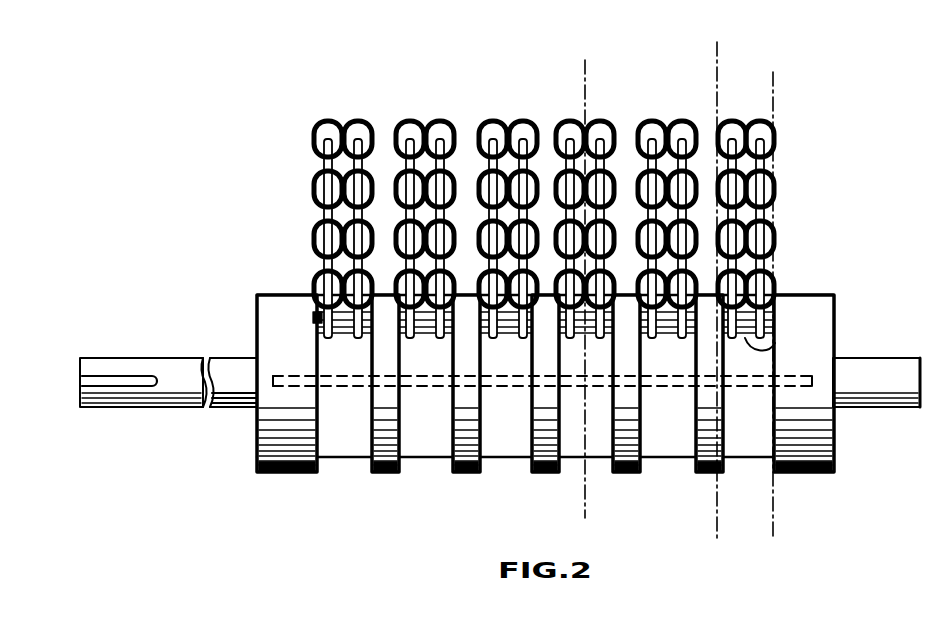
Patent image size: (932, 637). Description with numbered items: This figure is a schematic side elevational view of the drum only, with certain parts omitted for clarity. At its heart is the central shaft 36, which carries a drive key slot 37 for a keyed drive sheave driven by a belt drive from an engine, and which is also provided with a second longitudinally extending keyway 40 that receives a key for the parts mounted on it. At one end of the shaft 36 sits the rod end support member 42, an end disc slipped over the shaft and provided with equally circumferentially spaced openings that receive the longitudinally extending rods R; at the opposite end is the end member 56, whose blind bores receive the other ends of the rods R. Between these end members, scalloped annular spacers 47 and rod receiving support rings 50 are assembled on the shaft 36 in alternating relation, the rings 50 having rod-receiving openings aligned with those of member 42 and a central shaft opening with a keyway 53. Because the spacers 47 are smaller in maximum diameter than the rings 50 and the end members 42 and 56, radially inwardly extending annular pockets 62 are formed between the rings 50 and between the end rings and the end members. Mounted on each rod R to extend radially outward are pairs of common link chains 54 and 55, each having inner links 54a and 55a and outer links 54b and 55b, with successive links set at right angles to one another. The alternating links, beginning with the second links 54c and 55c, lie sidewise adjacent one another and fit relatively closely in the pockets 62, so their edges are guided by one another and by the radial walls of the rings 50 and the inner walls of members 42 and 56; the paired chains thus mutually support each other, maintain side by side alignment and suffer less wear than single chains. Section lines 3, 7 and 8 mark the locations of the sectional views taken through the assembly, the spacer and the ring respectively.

The central shaft 36 is at (238, 408).
The drive key slot 37 is at (125, 388).
The second longitudinally extending keyway 40 is at (512, 386).
The rod end support member 42 is at (818, 473).
The scalloped annular spacers 47 is at (433, 448).
The rod receiving support rings 50 is at (640, 463).
The keyway 53 is at (622, 386).
The common link chain 54 is at (261, 209).
The inner link 54a is at (318, 323).
The outer link 54b is at (326, 121).
The second link 54c is at (762, 268).
The common link chain 55 is at (534, 205).
The inner link 55a is at (355, 342).
The outer link 55b is at (356, 121).
The second link 55c is at (775, 297).
The end member 56 is at (275, 470).
The annular pockets 62 is at (316, 312).
The rods R is at (775, 343).
The section line 3- 3 is at (605, 505).
The section line 7- 7 is at (800, 530).
The section line 8- 8 is at (727, 530).